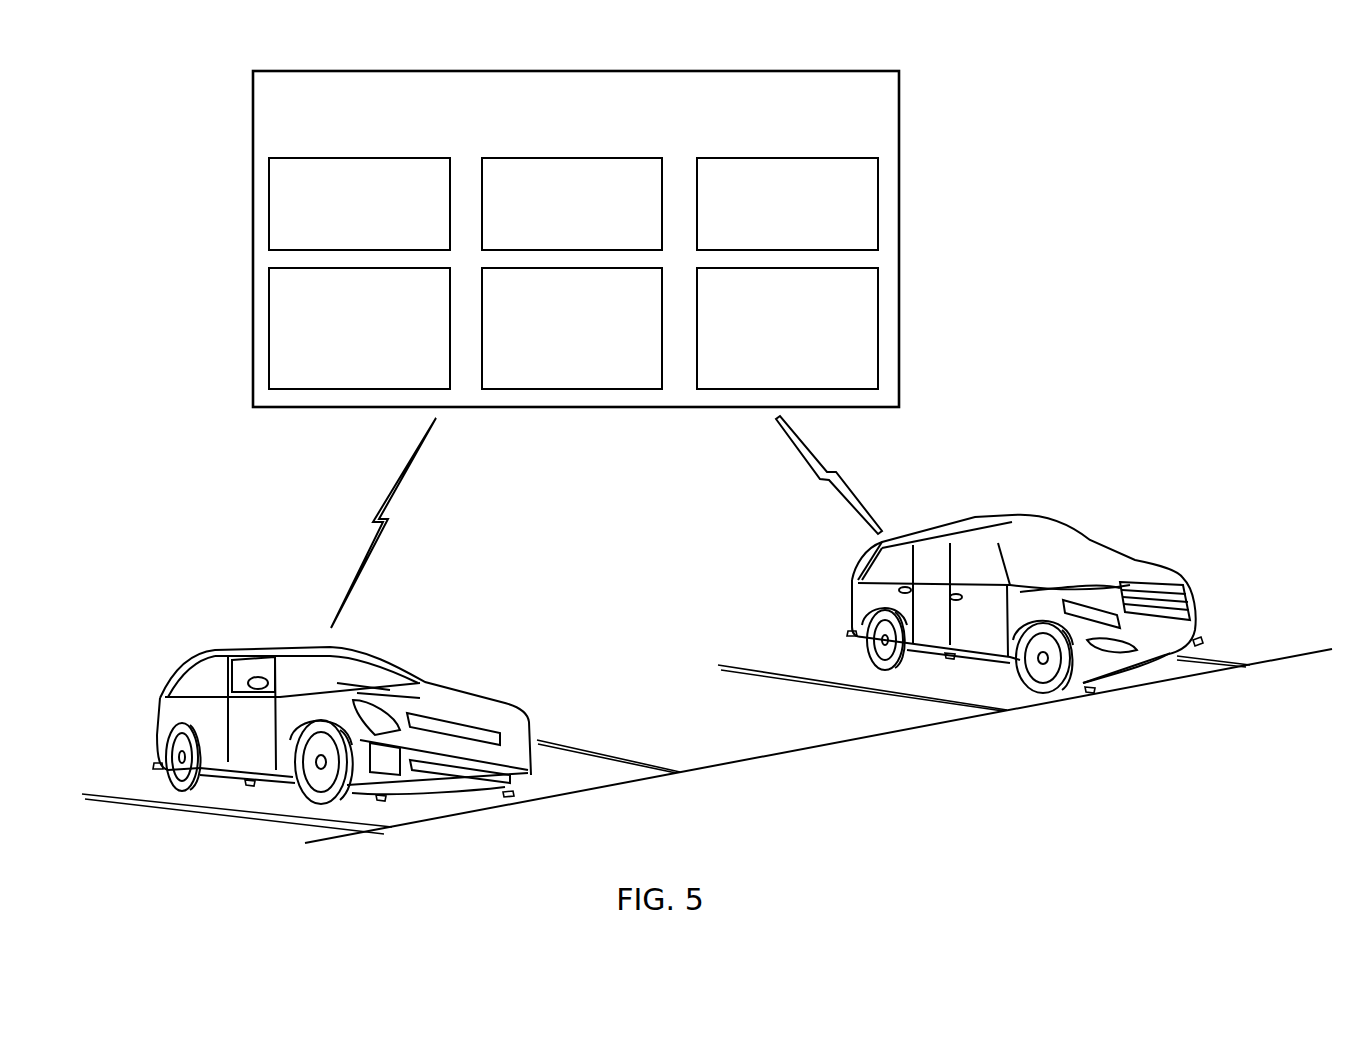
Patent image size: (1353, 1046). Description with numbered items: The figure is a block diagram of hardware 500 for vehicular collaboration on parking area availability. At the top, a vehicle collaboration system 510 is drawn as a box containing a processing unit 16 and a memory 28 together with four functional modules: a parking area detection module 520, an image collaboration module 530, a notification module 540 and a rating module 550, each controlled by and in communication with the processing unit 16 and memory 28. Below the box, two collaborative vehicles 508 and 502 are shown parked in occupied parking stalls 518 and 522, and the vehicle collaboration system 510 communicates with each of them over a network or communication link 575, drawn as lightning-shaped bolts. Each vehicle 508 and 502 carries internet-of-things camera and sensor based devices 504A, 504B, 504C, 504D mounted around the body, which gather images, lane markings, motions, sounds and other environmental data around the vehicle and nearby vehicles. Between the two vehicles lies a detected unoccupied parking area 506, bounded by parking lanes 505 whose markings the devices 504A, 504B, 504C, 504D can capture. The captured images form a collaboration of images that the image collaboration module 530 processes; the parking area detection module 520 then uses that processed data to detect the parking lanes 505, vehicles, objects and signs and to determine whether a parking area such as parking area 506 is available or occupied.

The hardware 500 is at (1122, 105).
The vehicle collaboration system 510 is at (253, 135).
The processing unit 16 is at (269, 207).
The memory 28 is at (662, 160).
The parking area detection module 520 is at (878, 222).
The image collaboration module 530 is at (269, 338).
The notification module 540 is at (572, 389).
The rating module 550 is at (878, 342).
The communication link 575 is at (385, 527).
The parking lanes 505 is at (675, 752).
The occupied parking stall 518 is at (560, 781).
The unoccupied parking area 506 is at (648, 718).
The occupied parking stall 522 is at (790, 666).
The vehicle 508 is at (275, 640).
The vehicle 502 is at (1007, 515).
The camera and sensor based device 504A is at (160, 767).
The camera and sensor based device 504B is at (250, 786).
The camera and sensor based device 504C is at (381, 801).
The camera and sensor based device 504D is at (510, 797).